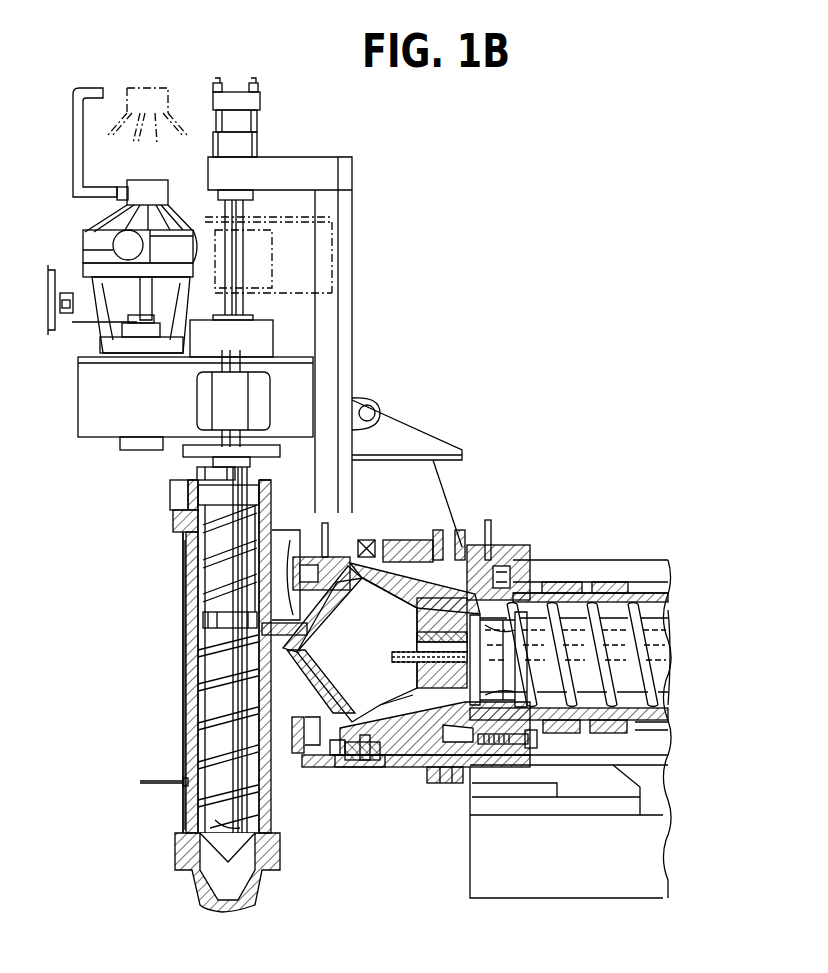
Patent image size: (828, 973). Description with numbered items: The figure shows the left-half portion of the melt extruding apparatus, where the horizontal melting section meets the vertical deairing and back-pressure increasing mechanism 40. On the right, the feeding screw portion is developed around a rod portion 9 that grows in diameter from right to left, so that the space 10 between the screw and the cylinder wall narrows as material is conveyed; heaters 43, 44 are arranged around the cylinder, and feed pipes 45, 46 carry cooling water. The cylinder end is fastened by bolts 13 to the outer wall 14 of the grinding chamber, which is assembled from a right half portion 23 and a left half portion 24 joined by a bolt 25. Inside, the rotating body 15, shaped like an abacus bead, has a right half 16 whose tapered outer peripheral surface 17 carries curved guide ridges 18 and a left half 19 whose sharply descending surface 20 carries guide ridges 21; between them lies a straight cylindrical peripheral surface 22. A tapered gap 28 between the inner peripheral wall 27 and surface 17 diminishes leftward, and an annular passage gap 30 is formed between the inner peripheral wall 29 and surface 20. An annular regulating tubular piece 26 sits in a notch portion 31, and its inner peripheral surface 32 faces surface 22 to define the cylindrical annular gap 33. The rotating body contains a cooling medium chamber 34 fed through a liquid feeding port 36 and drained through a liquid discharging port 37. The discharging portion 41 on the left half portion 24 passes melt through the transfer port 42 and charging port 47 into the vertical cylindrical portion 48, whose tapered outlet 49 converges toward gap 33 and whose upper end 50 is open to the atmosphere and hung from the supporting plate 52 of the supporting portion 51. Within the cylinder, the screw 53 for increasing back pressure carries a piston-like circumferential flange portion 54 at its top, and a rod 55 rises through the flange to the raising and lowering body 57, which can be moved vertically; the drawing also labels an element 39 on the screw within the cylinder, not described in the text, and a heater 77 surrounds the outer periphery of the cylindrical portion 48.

The rod portion 9 is at (650, 620).
The space 10 is at (622, 605).
The bolts 13 is at (540, 748).
The outer wall of grinding chamber 14 is at (555, 534).
The rotating body 15 is at (425, 793).
The right half of rotating body 16 is at (405, 565).
The outer peripheral surface of right half 17 is at (434, 770).
The guide ridges 18 is at (467, 785).
The left half of rotating body 19 is at (332, 718).
The outer peripheral surface of left half 20 is at (357, 727).
The guide ridges 21 is at (296, 740).
The straight cylindrical peripheral surface 22 is at (378, 768).
The right half portion of outer wall 23 is at (470, 558).
The left half portion of outer wall 24 is at (370, 548).
The bolt 25 is at (352, 760).
The regulating tubular piece 26 is at (394, 548).
The inner peripheral wall of right half portion 27 is at (486, 668).
The tapered gap 28 is at (440, 552).
The inner peripheral wall of left half portion 29 is at (335, 560).
The annular passage gap 30 is at (340, 748).
The notch portion 31 is at (382, 762).
The inner peripheral surface of regulating piece 32 is at (348, 768).
The cylindrical annular gap 33 is at (370, 577).
The cooling medium chamber 34 is at (328, 663).
The liquid feeding port 36 is at (392, 658).
The liquid discharging port 37 is at (415, 648).
The screw flight 39 is at (258, 728).
The deairing and back-pressure increasing mechanism 40 is at (180, 573).
The discharging portion 41 is at (285, 600).
The transfer port 42 is at (287, 653).
The heater 43 is at (562, 588).
The heater 44 is at (606, 588).
The feed pipe for cooling water 45 is at (322, 532).
The feed pipe for cooling water 46 is at (492, 525).
The charging port 47 is at (268, 690).
The cylindrical portion 48 is at (190, 648).
The outlet 49 is at (200, 903).
The upper end of cylindrical portion 50 is at (200, 483).
The supporting portion 51 is at (422, 440).
The supporting plate 52 is at (287, 500).
The screw for increasing back pressure 53 is at (195, 748).
The circumferential flange portion 54 is at (200, 620).
The rod 55 is at (198, 545).
The raising and lowering body 57 is at (95, 403).
The heater 77 is at (183, 700).